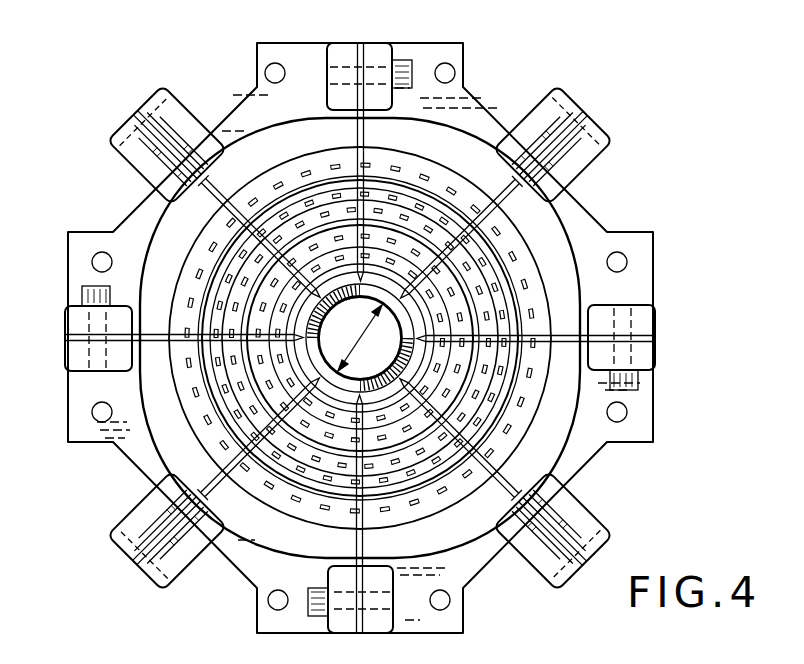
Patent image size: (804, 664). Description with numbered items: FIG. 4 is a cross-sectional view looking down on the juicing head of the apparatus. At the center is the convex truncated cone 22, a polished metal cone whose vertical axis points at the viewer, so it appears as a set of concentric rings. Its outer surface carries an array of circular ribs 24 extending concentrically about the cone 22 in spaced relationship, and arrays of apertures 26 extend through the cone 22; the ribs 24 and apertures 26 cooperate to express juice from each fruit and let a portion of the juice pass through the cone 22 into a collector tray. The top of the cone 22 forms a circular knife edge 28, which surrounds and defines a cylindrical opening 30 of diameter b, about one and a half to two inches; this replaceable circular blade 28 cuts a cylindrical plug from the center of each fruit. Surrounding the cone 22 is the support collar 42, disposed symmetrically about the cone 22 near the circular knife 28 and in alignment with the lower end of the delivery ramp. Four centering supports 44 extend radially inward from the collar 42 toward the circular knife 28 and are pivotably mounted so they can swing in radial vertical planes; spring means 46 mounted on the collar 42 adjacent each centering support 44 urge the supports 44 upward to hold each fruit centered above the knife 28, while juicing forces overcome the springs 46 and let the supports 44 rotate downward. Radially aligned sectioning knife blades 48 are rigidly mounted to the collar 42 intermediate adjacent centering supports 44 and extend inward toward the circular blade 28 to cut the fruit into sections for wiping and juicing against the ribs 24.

The convex truncated cone 22 is at (178, 250).
The circular ribs 24 is at (248, 366).
The apertures 26 is at (325, 165).
The circular knife edge 28 is at (316, 375).
The cylindrical opening 30 is at (392, 312).
The support collar 42 is at (492, 84).
The centering supports 44 is at (190, 218).
The spring means 46 is at (166, 118).
The sectioning knife blades 48 is at (398, 75).